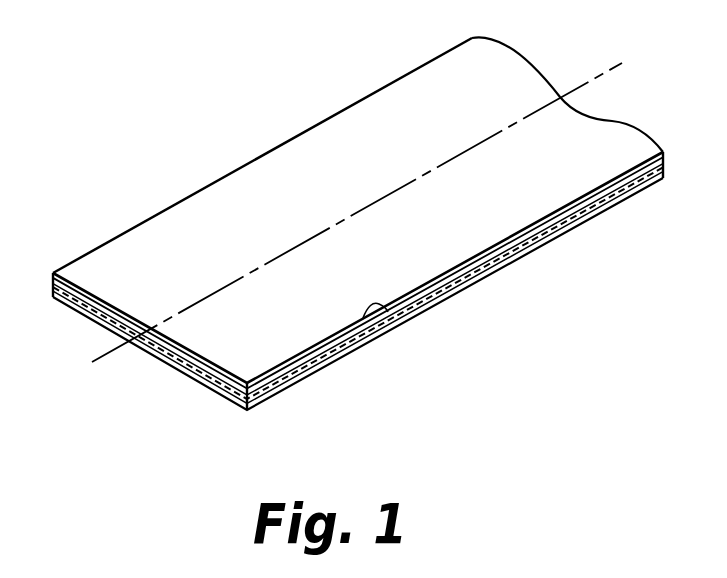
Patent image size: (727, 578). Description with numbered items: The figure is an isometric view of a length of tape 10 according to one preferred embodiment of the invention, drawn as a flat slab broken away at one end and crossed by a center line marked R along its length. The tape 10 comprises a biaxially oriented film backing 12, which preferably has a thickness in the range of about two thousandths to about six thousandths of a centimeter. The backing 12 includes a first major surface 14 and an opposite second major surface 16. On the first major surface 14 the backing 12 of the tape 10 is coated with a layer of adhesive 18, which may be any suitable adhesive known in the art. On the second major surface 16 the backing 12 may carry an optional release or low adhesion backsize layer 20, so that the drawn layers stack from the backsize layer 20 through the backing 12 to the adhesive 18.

The tape 10 is at (340, 78).
The biaxially oriented film backing 12 is at (210, 377).
The first major surface 14 is at (327, 368).
The second major surface 16 is at (388, 313).
The layer of adhesive 18 is at (255, 405).
The low adhesion backsize layer 20 is at (103, 260).
The longitudinal axis R is at (598, 78).